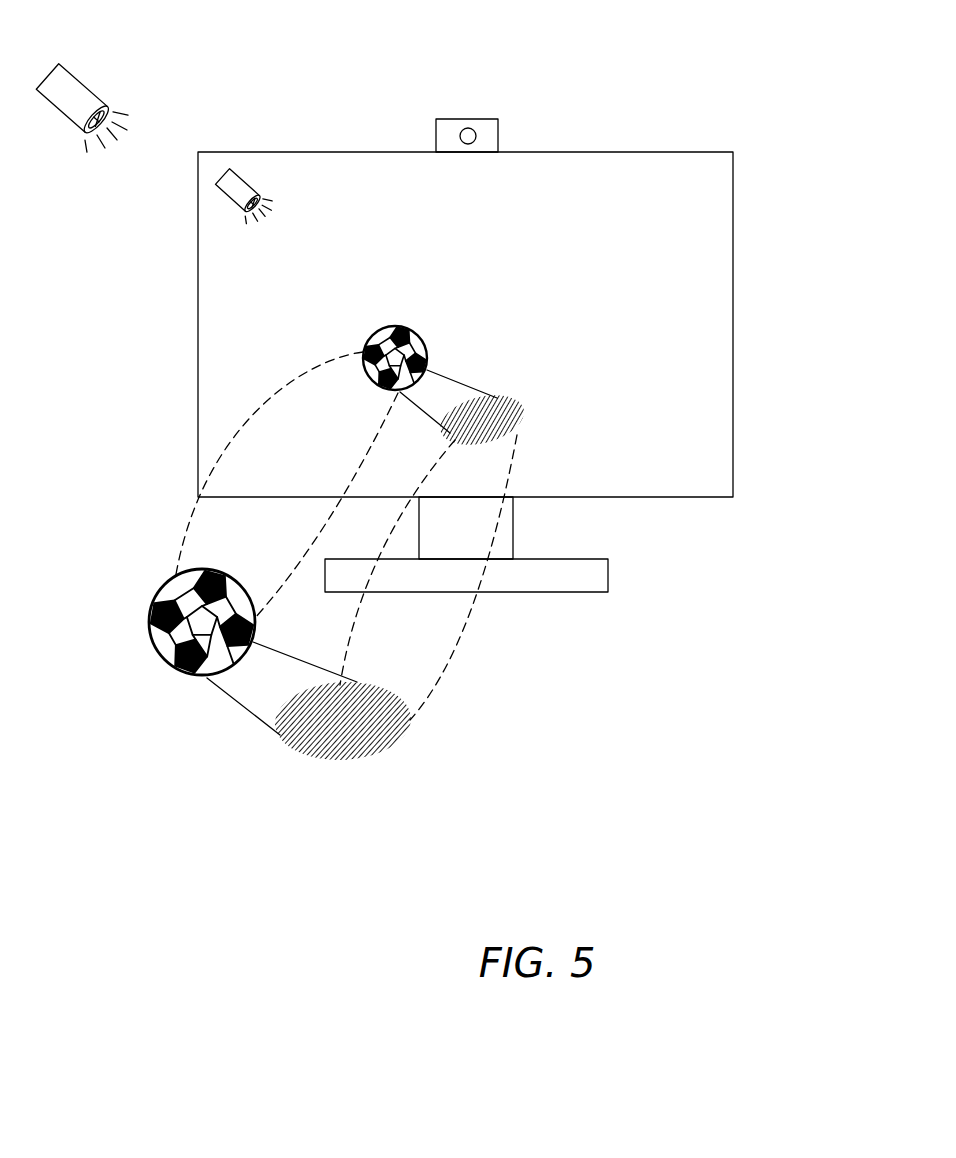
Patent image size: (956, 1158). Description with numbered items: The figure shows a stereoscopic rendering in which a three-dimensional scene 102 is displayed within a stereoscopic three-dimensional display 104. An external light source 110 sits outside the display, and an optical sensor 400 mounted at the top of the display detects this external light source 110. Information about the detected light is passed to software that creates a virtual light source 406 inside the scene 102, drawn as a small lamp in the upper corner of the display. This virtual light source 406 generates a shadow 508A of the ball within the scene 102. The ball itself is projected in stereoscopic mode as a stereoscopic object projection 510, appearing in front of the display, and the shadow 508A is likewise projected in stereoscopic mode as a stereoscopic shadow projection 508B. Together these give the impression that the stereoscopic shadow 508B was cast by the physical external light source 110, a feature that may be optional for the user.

The external light source 110 is at (83, 88).
The virtual light source 406 is at (240, 173).
The optical sensor 400 is at (482, 119).
The 3D scene 102 is at (702, 308).
The stereoscopic 3D display 104 is at (702, 498).
The shadow 508A is at (520, 408).
The stereoscopic object projection 510 is at (153, 650).
The stereoscopic shadow projection 508B is at (315, 758).